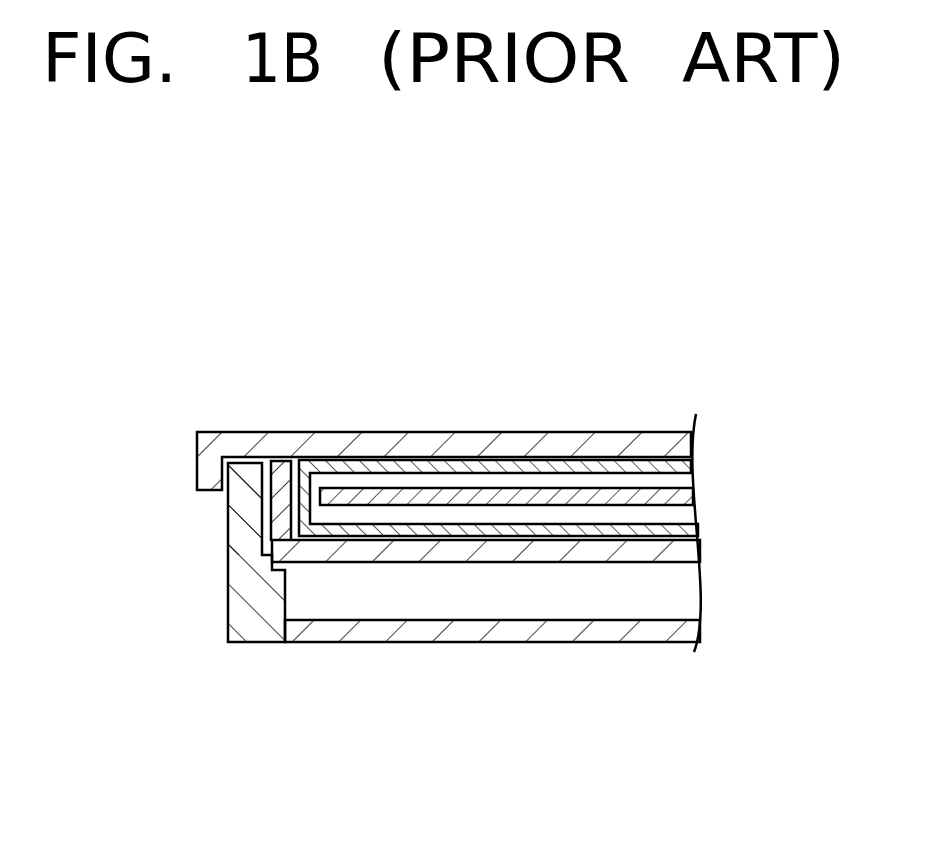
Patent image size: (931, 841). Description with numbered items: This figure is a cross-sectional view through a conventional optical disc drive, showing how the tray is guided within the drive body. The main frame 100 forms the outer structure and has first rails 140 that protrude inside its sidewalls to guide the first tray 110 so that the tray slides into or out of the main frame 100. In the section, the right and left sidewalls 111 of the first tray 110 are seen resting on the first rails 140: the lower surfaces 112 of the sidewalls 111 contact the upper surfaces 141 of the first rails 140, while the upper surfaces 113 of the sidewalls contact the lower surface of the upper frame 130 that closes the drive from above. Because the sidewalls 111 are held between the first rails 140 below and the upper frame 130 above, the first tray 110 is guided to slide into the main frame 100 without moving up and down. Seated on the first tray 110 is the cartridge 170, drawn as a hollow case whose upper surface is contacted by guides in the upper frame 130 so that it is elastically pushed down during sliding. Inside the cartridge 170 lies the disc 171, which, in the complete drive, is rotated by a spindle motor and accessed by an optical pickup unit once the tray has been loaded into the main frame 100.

The main frame 100 is at (240, 664).
The first tray 110 is at (604, 574).
The right and left sidewalls of the first tray 111 is at (273, 512).
The lower surfaces of the sidewalls of the first tray 112 is at (288, 568).
The upper surfaces of the sidewalls of the first tray 113 is at (280, 461).
The upper frame 130 is at (190, 432).
The first rails 140 is at (293, 598).
The upper surfaces of the first rails 141 is at (273, 562).
The cartridge 170 is at (431, 464).
The disc 171 is at (610, 491).